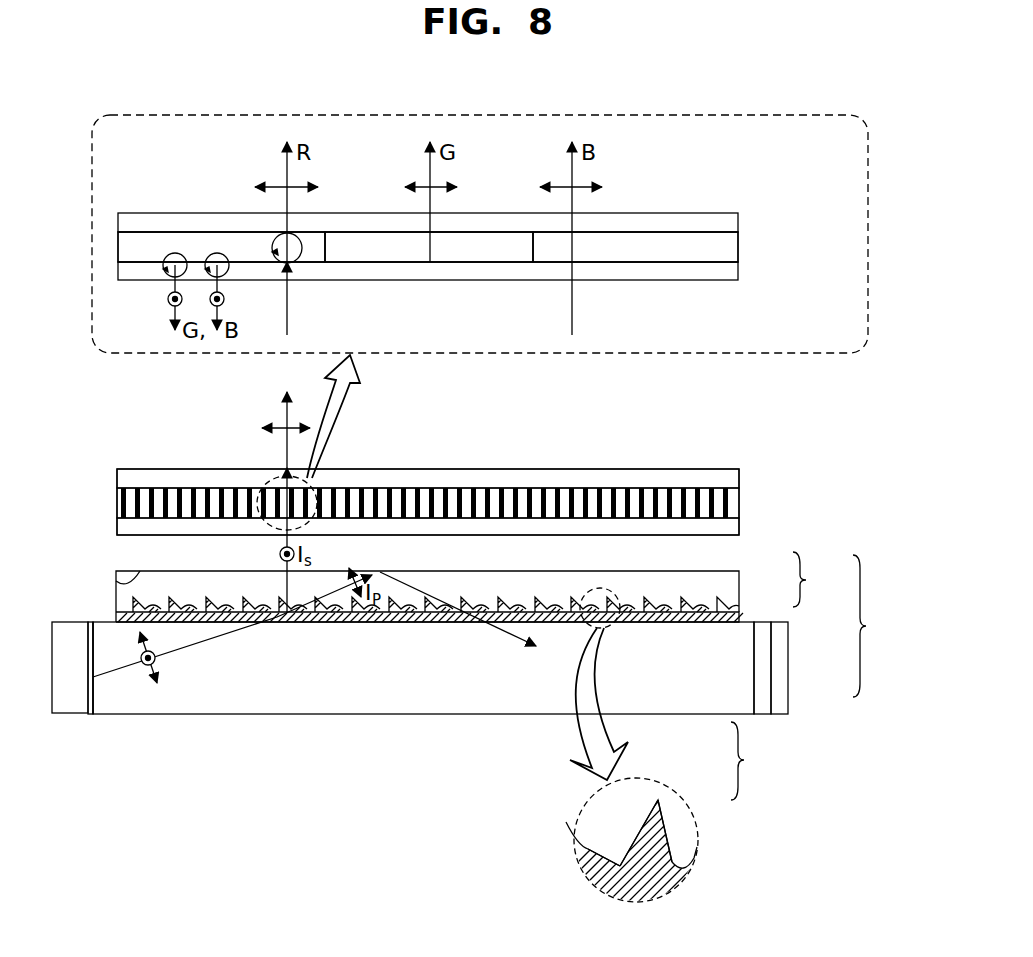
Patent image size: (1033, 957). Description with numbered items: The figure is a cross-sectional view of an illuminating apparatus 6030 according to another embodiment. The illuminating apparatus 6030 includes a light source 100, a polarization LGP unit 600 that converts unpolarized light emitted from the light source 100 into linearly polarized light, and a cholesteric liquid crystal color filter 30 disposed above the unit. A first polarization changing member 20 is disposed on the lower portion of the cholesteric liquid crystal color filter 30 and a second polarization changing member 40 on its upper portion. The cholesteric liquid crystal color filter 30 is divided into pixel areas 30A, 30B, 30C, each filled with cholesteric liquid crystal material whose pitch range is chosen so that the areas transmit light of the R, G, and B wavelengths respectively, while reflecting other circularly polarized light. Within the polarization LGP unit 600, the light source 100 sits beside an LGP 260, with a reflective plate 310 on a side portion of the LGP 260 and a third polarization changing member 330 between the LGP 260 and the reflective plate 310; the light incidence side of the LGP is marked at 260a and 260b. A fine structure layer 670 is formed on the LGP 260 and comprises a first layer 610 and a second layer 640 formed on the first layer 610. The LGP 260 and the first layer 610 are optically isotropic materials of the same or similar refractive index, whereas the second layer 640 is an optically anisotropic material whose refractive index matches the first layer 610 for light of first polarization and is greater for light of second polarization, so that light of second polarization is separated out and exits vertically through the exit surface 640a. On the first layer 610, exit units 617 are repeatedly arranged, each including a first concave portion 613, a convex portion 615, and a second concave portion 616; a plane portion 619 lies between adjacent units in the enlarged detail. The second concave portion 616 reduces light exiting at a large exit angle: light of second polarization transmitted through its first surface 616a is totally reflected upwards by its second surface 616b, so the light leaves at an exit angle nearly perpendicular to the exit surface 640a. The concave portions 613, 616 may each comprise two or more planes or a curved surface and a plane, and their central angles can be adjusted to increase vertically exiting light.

The second polarization changing member 40 is at (738, 222).
The cholesteric liquid crystal color filter 30 is at (741, 247).
The first polarization changing member 20 is at (738, 273).
The pixel area 30A is at (160, 259).
The pixel area 30B is at (393, 259).
The pixel area 30C is at (671, 259).
The illuminating apparatus 6030 is at (757, 447).
The second layer 640 is at (727, 583).
The exit surface 640a is at (116, 580).
The first layer 610 is at (730, 610).
The fine structure layer 670 is at (443, 579).
The reflective plate 310 is at (777, 633).
The third polarization changing member 330 is at (763, 655).
The LGP 260 is at (740, 685).
The light incidence surface 260a is at (94, 692).
The light guide side portion 260b is at (115, 628).
The light source 100 is at (72, 713).
The polarization LGP unit 600 is at (472, 625).
The first concave portion 613 is at (610, 853).
The convex portion 615 is at (637, 833).
The second concave portion 616 is at (668, 857).
The exit unit 617 is at (699, 794).
The curved surface 619 is at (574, 835).
The first surface 616a is at (615, 868).
The second surface 616b is at (690, 866).